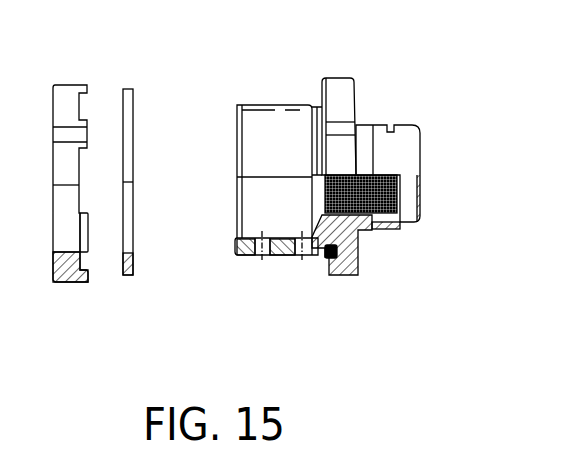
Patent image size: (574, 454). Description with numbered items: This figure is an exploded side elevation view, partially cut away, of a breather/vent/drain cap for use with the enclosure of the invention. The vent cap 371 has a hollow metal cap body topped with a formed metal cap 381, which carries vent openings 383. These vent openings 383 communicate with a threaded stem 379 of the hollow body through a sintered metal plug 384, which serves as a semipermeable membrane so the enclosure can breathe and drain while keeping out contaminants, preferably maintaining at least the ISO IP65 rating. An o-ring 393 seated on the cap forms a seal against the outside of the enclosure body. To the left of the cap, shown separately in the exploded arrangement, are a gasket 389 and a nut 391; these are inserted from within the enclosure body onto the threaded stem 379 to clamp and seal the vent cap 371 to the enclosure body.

The vent cap 371 is at (350, 278).
The threaded stem 379 is at (283, 100).
The formed metal cap 381 is at (407, 232).
The vent openings 383 is at (391, 124).
The sintered metal plug 384 is at (373, 226).
The gasket 389 is at (128, 278).
The nut 391 is at (75, 284).
The o-ring 393 is at (325, 259).